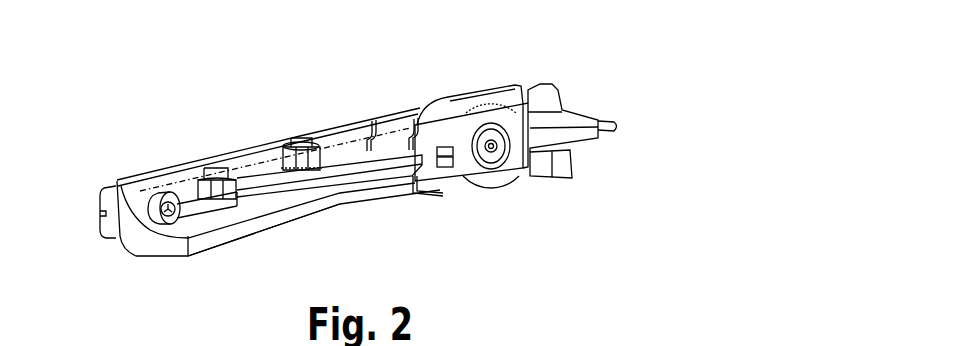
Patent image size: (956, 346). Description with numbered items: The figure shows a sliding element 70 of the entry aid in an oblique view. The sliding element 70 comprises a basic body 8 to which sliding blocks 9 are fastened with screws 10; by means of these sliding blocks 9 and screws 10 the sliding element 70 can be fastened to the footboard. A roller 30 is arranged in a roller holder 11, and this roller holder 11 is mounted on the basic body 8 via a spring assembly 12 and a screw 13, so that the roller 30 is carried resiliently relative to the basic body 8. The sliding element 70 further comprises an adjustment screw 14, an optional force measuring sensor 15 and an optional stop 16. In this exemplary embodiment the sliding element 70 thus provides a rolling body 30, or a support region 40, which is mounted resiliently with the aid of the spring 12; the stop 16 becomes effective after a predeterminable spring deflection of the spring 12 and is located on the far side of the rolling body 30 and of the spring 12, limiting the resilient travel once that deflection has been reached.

The basic body 8 is at (158, 247).
The sliding blocks 9 is at (108, 215).
The screws 10 is at (153, 197).
The roller holder 11 is at (507, 167).
The spring assembly 12 is at (340, 184).
The screw 13 is at (215, 173).
The adjustment screw 14 is at (298, 142).
The force measuring sensor 15 is at (580, 133).
The stop 16 is at (230, 248).
The roller 30 is at (450, 107).
The support region 40 is at (478, 207).
The sliding element 70 is at (616, 62).